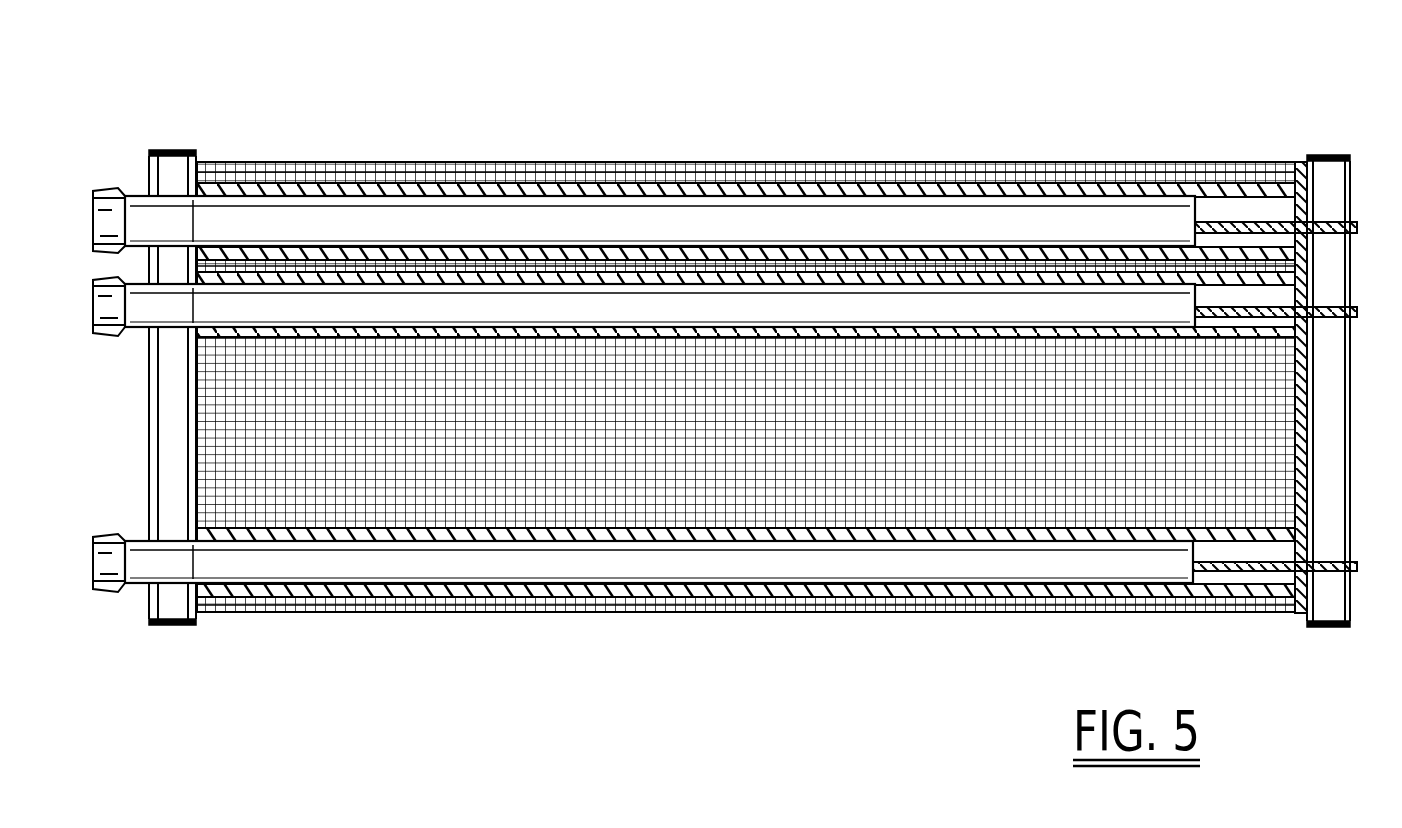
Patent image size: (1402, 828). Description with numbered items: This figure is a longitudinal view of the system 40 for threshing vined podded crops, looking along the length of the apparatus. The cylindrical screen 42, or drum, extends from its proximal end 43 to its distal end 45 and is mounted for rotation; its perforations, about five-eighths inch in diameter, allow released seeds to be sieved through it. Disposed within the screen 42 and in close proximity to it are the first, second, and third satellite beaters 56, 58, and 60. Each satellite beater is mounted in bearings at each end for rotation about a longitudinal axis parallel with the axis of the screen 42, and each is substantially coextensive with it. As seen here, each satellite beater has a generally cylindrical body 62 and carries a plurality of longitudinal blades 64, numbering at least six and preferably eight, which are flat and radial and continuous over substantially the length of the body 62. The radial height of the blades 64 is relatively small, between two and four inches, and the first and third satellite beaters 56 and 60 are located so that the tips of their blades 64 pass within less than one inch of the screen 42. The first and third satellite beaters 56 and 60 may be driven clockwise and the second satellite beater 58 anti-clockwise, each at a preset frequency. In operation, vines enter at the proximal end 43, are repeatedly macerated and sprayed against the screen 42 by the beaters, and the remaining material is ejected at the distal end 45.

The system for threshing vined podded crops 40 is at (1068, 86).
The cylindrical screen 42 is at (718, 167).
The proximal end 43 is at (1336, 395).
The distal end 45 is at (170, 432).
The first satellite beater 56 is at (807, 565).
The second satellite beater 58 is at (543, 310).
The third satellite beater 60 is at (628, 217).
The cylindrical body 62 is at (732, 244).
The longitudinal blades 64 is at (395, 330).